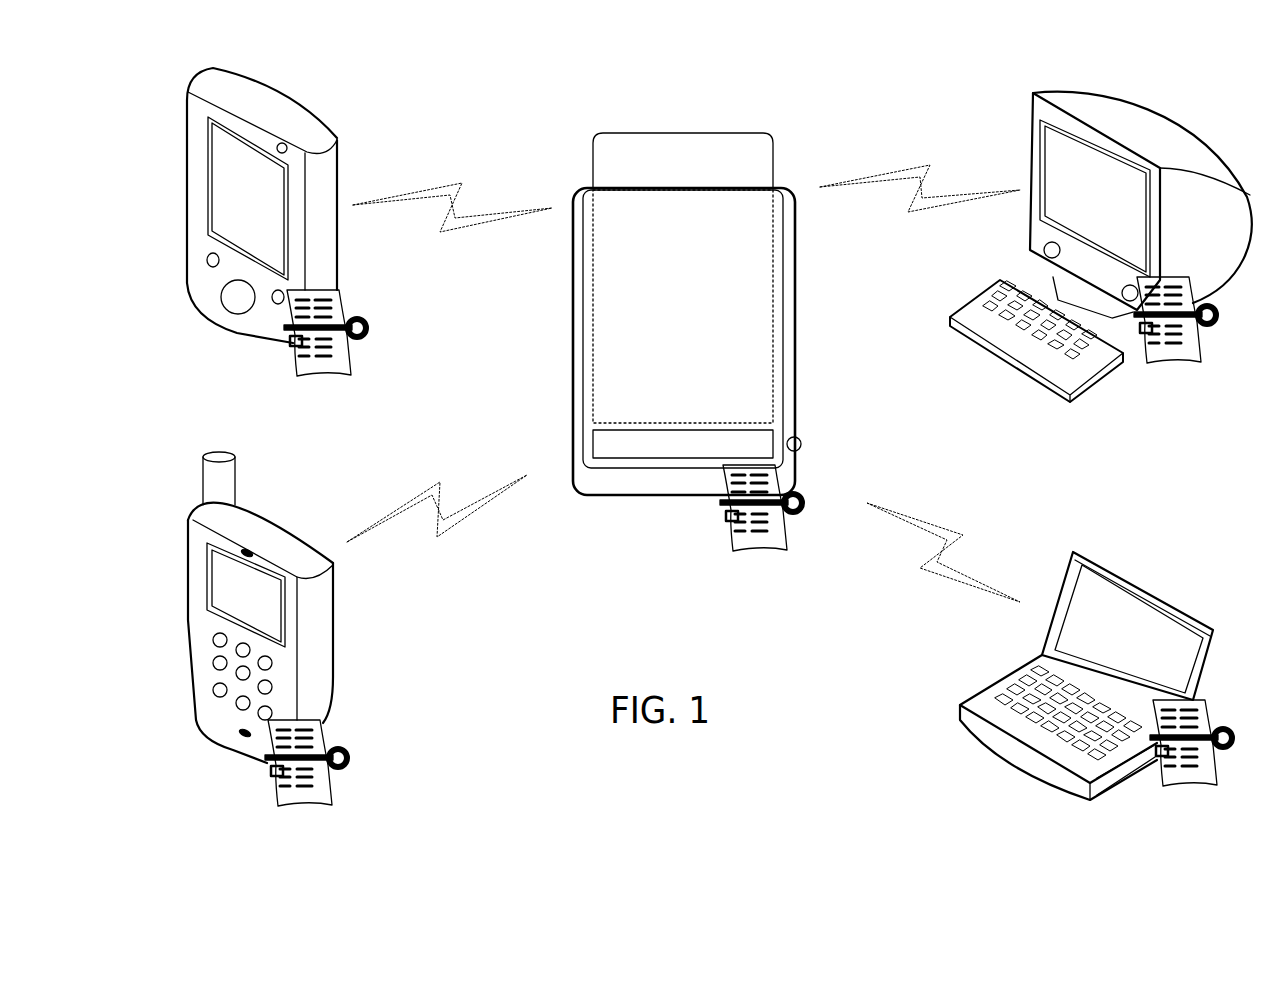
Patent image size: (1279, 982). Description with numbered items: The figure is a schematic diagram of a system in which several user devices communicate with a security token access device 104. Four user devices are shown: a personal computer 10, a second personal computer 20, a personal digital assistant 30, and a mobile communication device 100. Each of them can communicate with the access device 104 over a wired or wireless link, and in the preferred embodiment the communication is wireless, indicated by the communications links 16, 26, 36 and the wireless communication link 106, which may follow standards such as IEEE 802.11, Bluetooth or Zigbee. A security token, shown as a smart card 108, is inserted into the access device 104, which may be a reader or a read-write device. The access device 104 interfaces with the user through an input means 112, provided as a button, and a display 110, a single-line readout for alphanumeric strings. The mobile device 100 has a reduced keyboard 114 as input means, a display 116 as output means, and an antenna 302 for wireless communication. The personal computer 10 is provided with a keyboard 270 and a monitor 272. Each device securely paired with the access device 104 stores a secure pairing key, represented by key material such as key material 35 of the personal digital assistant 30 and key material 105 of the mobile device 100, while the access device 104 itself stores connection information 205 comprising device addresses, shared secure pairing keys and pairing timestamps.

The personal computer 10 is at (1101, 266).
The communications link 16 is at (920, 173).
The second personal computer 20 is at (1128, 593).
The communications link 26 is at (943, 551).
The personal digital assistant 30 is at (285, 138).
The key material 35 is at (325, 342).
The communications link 36 is at (452, 192).
The mobile communication device 100 is at (271, 599).
The security token access device 104 is at (681, 316).
The key material 105 is at (306, 775).
The wireless communication link 106 is at (437, 495).
The smart card 108 is at (643, 133).
The display 110 is at (693, 460).
The input means 112 is at (800, 447).
The reduced keyboard 114 is at (225, 675).
The display 116 is at (246, 595).
The connection information 205 is at (761, 521).
The keyboard 270 is at (1068, 375).
The monitor 272 is at (1095, 198).
The antenna 302 is at (210, 483).